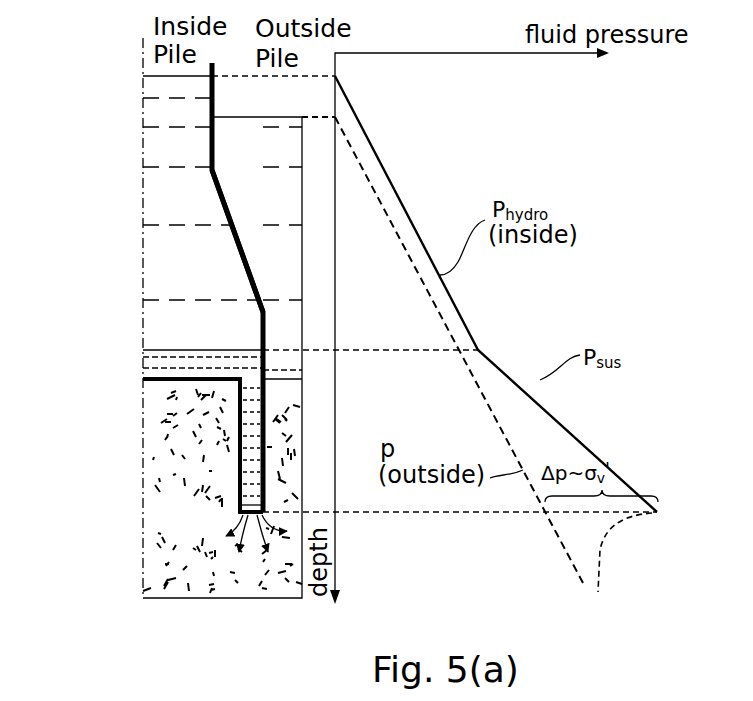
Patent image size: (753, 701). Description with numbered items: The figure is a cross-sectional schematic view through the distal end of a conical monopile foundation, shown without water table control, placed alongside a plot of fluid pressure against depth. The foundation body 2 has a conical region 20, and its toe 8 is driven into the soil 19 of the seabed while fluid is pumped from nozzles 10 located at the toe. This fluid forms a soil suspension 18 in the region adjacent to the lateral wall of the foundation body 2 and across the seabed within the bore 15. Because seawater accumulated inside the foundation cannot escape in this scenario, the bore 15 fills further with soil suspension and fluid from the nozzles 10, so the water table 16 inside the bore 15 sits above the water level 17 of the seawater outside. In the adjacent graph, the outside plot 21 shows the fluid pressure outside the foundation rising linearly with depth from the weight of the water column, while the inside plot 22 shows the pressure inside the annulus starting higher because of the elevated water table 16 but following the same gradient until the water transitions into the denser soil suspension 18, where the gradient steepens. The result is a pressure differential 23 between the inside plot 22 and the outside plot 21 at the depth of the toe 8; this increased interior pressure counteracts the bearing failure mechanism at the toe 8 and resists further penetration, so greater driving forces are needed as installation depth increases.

The foundation body 2 is at (212, 165).
The toe 8 is at (252, 515).
The nozzles 10 is at (240, 494).
The bore 15 is at (180, 268).
The water table 16 is at (152, 76).
The water level 17 is at (256, 117).
The soil suspension 18 is at (165, 358).
The soil 19 is at (178, 410).
The conical region 20 is at (212, 220).
The outside plot 21 is at (358, 164).
The inside plot 22 is at (410, 212).
The pressure differential 23 is at (615, 500).